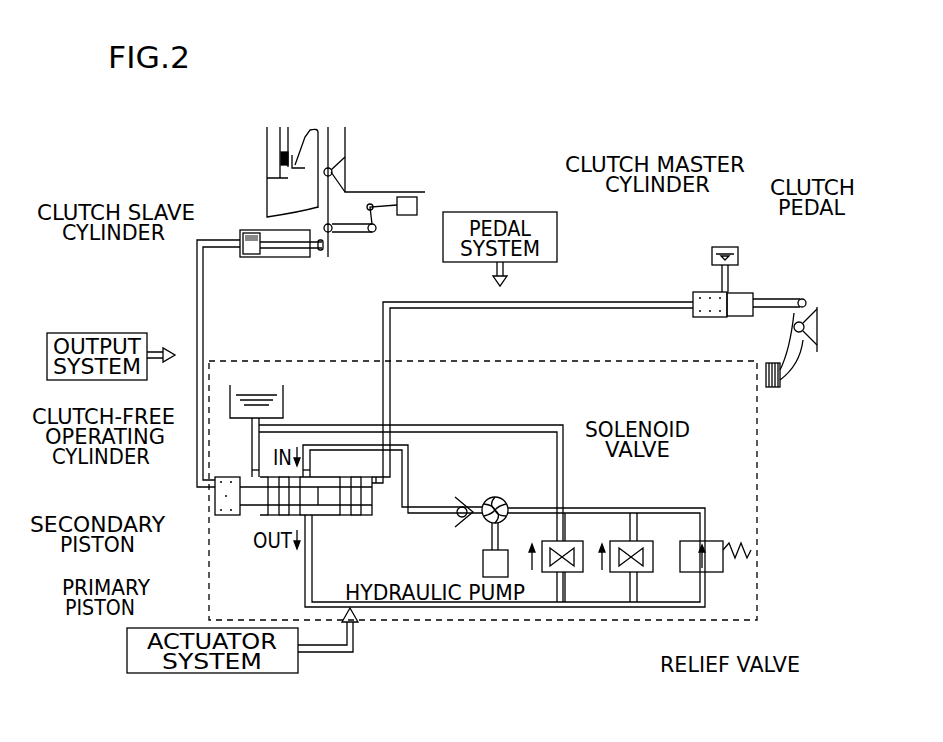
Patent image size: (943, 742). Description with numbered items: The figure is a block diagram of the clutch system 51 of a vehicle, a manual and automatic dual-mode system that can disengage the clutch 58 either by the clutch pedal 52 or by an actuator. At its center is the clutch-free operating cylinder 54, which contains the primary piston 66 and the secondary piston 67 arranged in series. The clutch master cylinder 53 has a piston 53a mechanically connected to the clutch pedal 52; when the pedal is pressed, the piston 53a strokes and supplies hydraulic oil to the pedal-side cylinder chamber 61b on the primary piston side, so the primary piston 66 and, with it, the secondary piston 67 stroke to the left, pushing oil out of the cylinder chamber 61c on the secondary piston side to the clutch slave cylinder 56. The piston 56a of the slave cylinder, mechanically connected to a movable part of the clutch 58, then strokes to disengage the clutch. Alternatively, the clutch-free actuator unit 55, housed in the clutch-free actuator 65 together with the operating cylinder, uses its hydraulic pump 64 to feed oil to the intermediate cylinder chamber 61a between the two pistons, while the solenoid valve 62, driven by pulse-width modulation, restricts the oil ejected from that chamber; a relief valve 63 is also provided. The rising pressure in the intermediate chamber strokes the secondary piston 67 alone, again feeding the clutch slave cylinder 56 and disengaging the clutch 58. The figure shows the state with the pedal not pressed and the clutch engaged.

The clutch system 51 is at (124, 134).
The clutch pedal 52 is at (820, 298).
The clutch master cylinder 53 is at (693, 292).
The piston 53a is at (738, 318).
The clutch-free operating cylinder 54 is at (215, 498).
The clutch-free actuator unit 55 is at (724, 504).
The clutch slave cylinder 56 is at (240, 232).
The piston 56a is at (255, 258).
The clutch 58 is at (357, 160).
The intermediate cylinder chamber 61a is at (325, 478).
The pedal-side cylinder chamber 61b is at (373, 514).
The cylinder chamber on the secondary piston side 61c is at (230, 477).
The solenoid valve 62 is at (617, 541).
The relief valve 63 is at (723, 572).
The hydraulic pump 64 is at (482, 523).
The clutch-free actuator 65 is at (440, 398).
The primary piston 66 is at (338, 516).
The secondary piston 67 is at (238, 517).